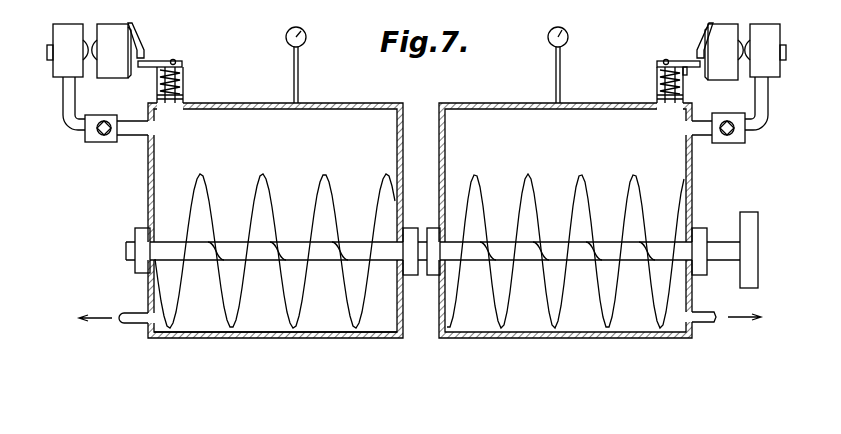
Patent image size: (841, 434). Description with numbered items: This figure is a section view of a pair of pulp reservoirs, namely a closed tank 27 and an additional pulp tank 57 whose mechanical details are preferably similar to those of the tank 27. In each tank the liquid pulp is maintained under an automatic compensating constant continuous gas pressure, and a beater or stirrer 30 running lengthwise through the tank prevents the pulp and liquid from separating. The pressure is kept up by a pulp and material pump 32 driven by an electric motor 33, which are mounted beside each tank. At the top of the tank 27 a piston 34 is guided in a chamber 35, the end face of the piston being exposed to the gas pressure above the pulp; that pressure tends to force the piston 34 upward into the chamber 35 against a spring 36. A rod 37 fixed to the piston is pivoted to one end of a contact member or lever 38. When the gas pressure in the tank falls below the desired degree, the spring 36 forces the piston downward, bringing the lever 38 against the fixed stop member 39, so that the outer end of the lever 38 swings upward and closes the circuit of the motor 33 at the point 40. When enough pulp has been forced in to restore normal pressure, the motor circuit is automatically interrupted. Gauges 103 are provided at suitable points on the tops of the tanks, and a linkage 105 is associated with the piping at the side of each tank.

The tank 27 is at (497, 103).
The beater or stirrer 30 is at (640, 212).
The pulp and material pump 32 is at (67, 62).
The electric motor 33 is at (113, 68).
The piston 34 is at (176, 100).
The chamber 35 is at (184, 80).
The spring 36 is at (181, 75).
The rod 37 is at (176, 62).
The contact member or lever 38 is at (683, 65).
The fixed stop member 39 is at (157, 72).
The point 40 is at (144, 53).
The additional pulp tank 57 is at (340, 339).
The gauge 103 is at (306, 37).
The linkage 105 is at (103, 143).